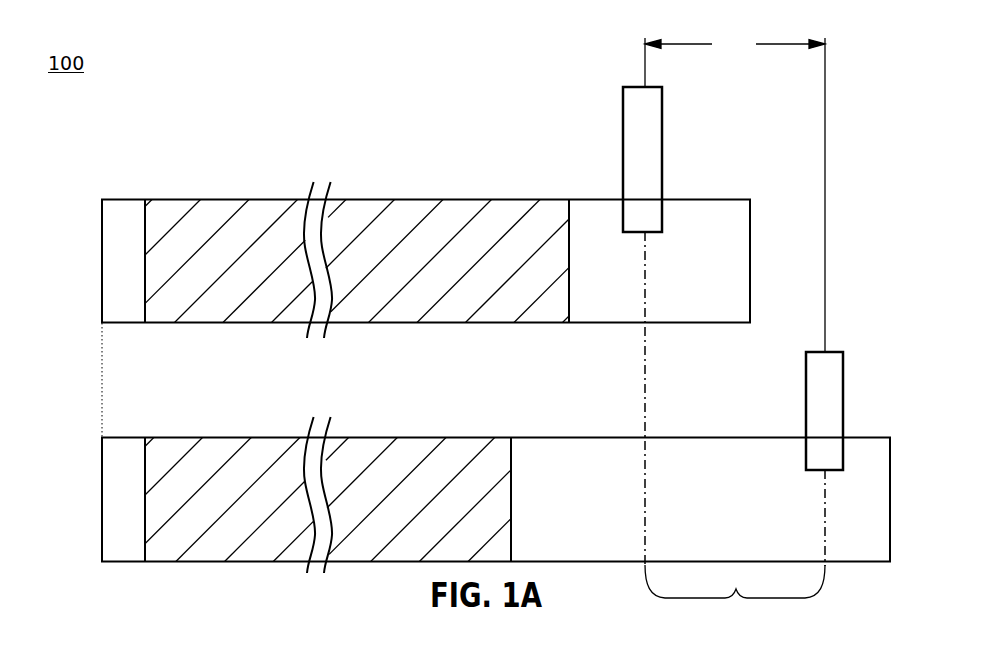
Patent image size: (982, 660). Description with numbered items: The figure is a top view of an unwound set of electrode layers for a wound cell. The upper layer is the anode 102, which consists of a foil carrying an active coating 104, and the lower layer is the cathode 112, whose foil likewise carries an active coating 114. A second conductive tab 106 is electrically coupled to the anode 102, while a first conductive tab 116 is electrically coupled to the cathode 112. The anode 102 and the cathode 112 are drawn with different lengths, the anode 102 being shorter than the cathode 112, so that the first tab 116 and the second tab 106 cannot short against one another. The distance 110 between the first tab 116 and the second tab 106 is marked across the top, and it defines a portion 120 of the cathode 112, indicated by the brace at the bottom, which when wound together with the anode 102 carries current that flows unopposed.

The anode 102 is at (117, 200).
The active coating 104 is at (207, 223).
The second conductive tab 106 is at (630, 152).
The distance 110 is at (735, 44).
The cathode 112 is at (115, 438).
The active coating 114 is at (215, 457).
The first conductive tab 116 is at (818, 400).
The portion 120 is at (735, 599).